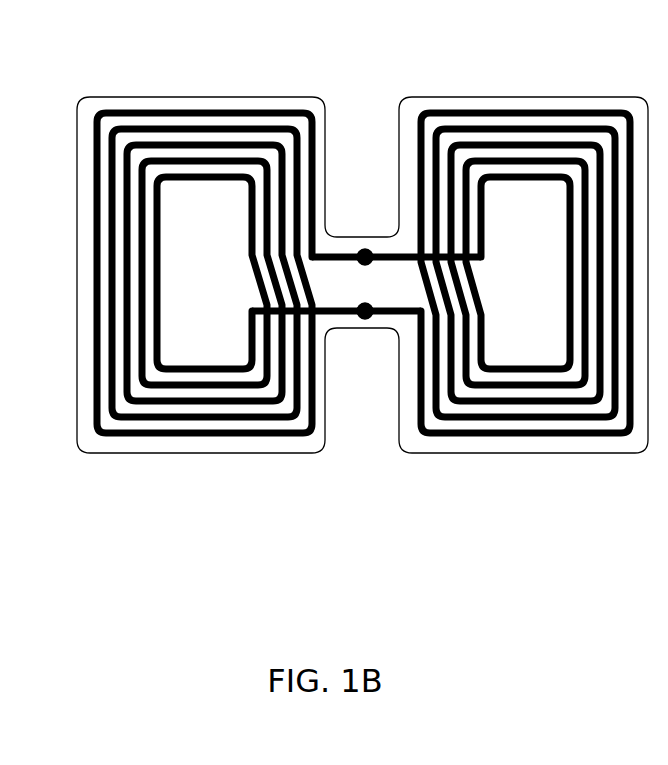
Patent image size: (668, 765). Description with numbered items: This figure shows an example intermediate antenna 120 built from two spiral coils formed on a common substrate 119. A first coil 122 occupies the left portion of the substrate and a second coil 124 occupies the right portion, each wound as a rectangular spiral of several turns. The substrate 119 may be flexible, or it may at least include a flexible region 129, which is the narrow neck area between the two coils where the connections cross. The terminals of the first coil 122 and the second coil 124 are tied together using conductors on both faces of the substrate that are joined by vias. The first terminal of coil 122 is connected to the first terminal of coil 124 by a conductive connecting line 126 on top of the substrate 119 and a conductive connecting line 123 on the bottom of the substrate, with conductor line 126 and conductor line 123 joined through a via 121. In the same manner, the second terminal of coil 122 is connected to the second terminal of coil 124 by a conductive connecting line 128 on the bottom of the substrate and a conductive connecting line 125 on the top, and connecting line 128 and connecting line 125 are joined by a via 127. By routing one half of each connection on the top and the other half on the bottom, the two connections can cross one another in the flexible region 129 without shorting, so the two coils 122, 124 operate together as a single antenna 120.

The substrate 119 is at (510, 97).
The antenna 120 is at (145, 95).
The via 121 is at (366, 249).
The first coil 122 is at (148, 383).
The conductive connecting line 123 is at (371, 252).
The second coil 124 is at (472, 398).
The conductive connecting line 125 is at (380, 313).
The conductive connecting line 126 is at (333, 250).
The via 127 is at (353, 313).
The conductive connecting line 128 is at (330, 313).
The flexible region 129 is at (347, 294).